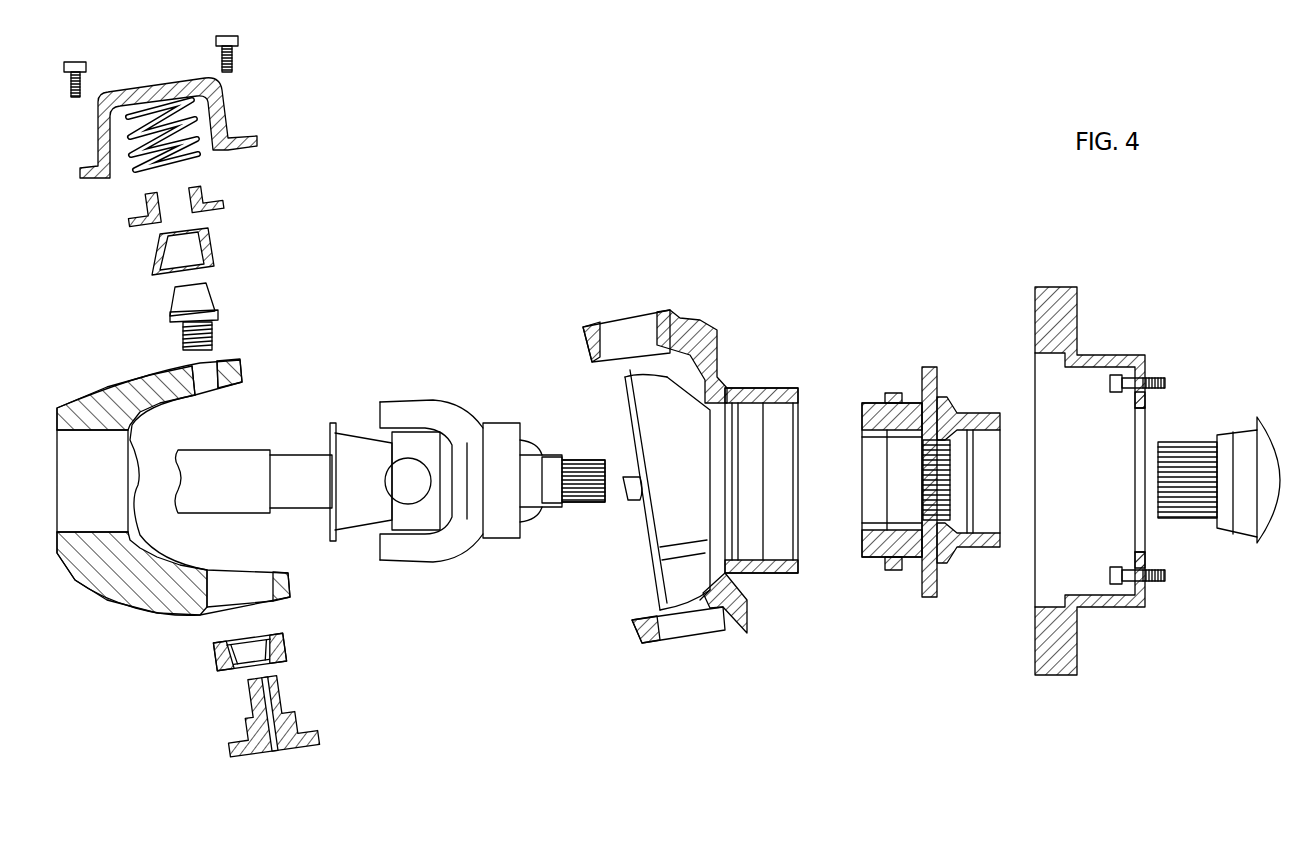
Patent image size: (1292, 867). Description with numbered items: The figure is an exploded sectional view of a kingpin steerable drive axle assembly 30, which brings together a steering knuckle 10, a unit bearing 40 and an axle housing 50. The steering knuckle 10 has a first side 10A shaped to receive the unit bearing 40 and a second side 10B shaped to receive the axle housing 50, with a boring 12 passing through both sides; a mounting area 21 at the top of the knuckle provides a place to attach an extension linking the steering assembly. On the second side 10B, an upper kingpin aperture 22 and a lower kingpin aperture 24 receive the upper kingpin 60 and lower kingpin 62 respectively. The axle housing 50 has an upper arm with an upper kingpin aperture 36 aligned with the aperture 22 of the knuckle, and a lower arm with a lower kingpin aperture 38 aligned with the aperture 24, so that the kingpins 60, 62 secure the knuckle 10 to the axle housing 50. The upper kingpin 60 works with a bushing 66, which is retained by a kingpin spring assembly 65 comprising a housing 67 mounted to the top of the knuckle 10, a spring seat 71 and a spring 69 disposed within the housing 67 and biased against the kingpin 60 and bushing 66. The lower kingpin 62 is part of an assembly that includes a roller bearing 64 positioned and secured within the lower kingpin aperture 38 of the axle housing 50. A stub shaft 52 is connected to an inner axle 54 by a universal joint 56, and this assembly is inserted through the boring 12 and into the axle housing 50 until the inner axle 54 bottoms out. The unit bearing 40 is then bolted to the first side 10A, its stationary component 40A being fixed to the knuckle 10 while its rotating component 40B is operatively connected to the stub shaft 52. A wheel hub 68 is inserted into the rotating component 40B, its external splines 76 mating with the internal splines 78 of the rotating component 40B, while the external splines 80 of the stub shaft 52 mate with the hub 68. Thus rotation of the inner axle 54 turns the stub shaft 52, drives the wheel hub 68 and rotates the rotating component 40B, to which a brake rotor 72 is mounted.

The steering knuckle 10 is at (748, 314).
The first side 10A is at (812, 572).
The second side 10B is at (636, 582).
The boring 12 is at (787, 477).
The mounting area 21 is at (668, 313).
The upper kingpin aperture 22 is at (625, 333).
The lower kingpin aperture 24 is at (683, 627).
The kingpin steerable drive axle assembly 30 is at (1283, 776).
The upper kingpin aperture 36 is at (207, 375).
The lower kingpin aperture 38 is at (245, 595).
The unit bearing 40 is at (1000, 346).
The stationary component 40A is at (877, 400).
The rotating component 40B is at (970, 413).
The axle housing 50 is at (129, 618).
The stub shaft 52 is at (552, 457).
The inner axle 54 is at (213, 457).
The universal joint 56 is at (476, 390).
The upper kingpin 60 is at (213, 293).
The lower kingpin 62 is at (226, 748).
The roller bearing 64 is at (216, 649).
The kingpin spring assembly 65 is at (229, 92).
The bushing 66 is at (211, 239).
The housing 67 is at (97, 127).
The wheel hub 68 is at (1228, 433).
The spring 69 is at (166, 112).
The spring seat 71 is at (146, 206).
The brake rotor 72 is at (1075, 320).
The external splines 76 is at (1195, 440).
The internal splines 78 is at (937, 483).
The external splines 80 is at (599, 460).